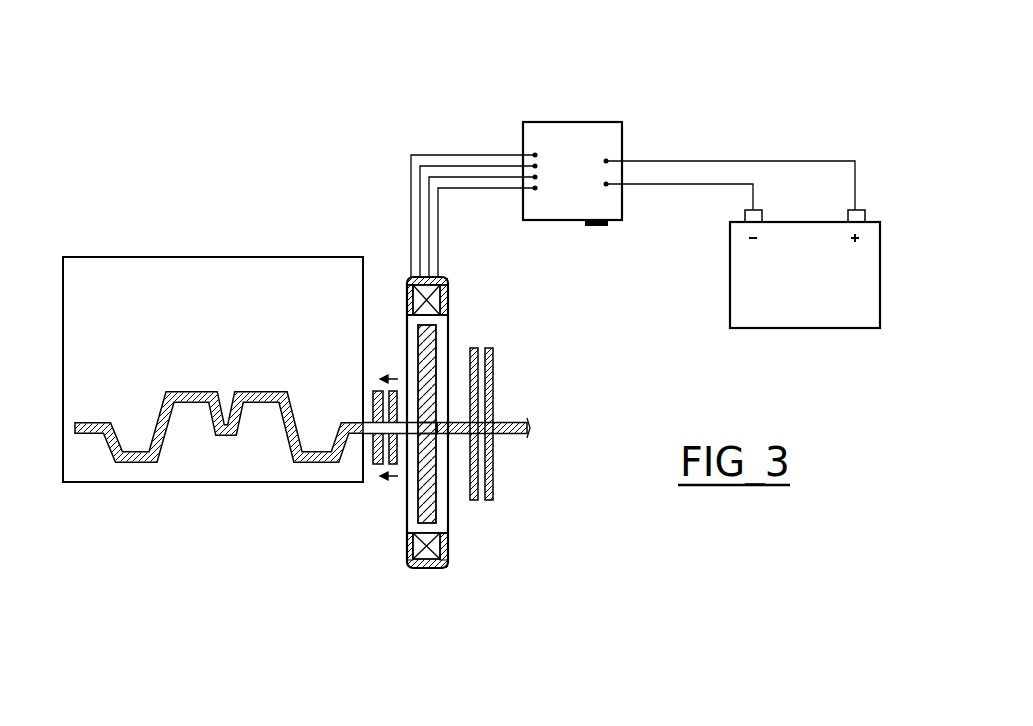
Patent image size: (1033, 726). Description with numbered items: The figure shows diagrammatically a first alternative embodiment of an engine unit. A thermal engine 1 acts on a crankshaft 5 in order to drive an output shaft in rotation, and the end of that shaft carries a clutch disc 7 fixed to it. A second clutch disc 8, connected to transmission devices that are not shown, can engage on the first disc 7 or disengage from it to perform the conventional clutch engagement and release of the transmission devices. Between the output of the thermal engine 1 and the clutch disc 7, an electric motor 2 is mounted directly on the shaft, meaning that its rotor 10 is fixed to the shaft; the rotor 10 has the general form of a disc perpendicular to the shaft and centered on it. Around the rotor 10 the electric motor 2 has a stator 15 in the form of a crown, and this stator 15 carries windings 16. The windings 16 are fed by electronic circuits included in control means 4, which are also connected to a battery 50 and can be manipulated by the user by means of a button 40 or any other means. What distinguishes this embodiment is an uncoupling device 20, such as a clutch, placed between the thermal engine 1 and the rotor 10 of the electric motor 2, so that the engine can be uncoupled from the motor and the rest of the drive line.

The thermal engine 1 is at (120, 246).
The electric motor 2 is at (394, 556).
The control means 4 is at (583, 114).
The crankshaft 5 is at (138, 462).
The clutch disc 7 is at (470, 364).
The second clutch disc 8 is at (494, 365).
The rotor 10 is at (430, 338).
The stator 15 is at (448, 543).
The windings 16 is at (432, 562).
The uncoupling device 20 is at (367, 390).
The button 40 is at (593, 226).
The battery 50 is at (802, 305).